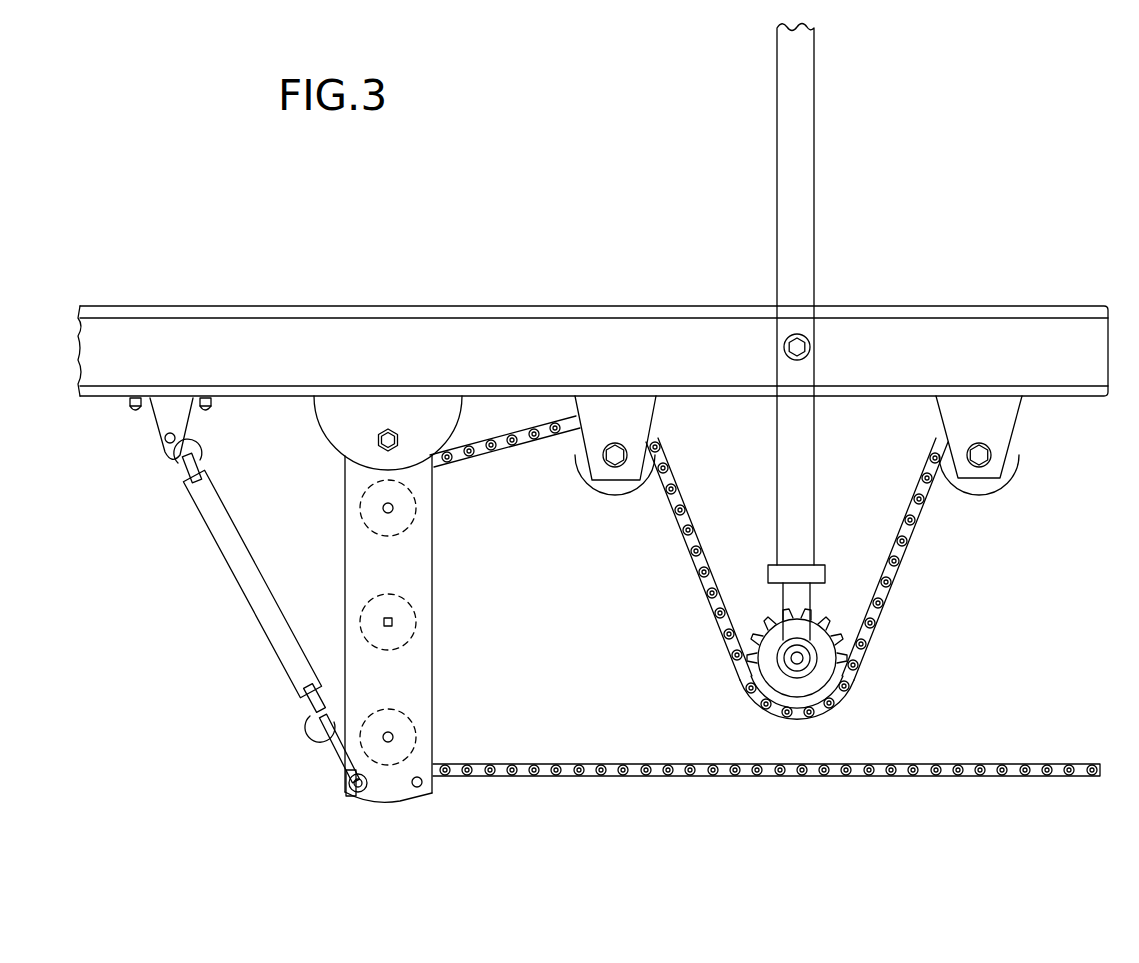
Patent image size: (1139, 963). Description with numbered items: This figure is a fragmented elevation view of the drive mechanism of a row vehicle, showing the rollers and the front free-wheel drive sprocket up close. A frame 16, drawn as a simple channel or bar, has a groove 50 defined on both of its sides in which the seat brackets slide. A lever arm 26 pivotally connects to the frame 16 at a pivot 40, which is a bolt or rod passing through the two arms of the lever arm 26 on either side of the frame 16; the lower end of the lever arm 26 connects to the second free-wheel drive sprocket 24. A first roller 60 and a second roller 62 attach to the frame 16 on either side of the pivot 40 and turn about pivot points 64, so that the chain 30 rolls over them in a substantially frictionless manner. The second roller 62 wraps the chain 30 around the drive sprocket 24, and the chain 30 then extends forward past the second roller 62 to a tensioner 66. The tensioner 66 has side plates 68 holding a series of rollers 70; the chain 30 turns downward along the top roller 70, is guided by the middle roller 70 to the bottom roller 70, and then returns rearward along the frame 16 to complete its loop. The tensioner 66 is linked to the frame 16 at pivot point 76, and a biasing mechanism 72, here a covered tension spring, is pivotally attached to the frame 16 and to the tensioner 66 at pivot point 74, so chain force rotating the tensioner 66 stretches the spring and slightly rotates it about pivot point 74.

The frame 16 is at (637, 304).
The groove 50 is at (526, 361).
The lever arm 26 is at (802, 133).
The pivot 40 is at (810, 346).
The pivot point 76 is at (387, 429).
The second roller 62 is at (572, 448).
The first roller 60 is at (1018, 441).
The pivot points 64 is at (622, 460).
The chain 30 is at (908, 542).
The second free-wheel drive sprocket 24 is at (848, 648).
The side plates 68 is at (365, 557).
The rollers 70 is at (417, 508).
The biasing mechanism 72 is at (248, 604).
The pivot point 74 is at (357, 790).
The tensioner 66 is at (400, 803).